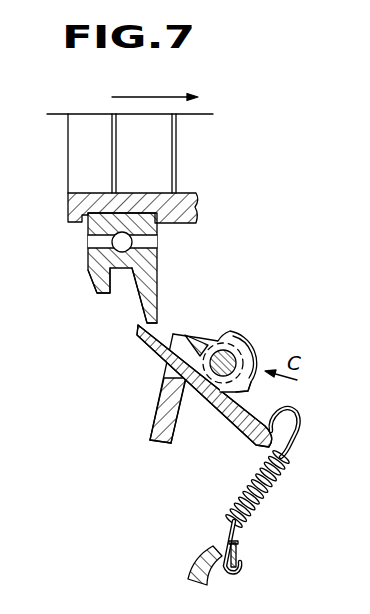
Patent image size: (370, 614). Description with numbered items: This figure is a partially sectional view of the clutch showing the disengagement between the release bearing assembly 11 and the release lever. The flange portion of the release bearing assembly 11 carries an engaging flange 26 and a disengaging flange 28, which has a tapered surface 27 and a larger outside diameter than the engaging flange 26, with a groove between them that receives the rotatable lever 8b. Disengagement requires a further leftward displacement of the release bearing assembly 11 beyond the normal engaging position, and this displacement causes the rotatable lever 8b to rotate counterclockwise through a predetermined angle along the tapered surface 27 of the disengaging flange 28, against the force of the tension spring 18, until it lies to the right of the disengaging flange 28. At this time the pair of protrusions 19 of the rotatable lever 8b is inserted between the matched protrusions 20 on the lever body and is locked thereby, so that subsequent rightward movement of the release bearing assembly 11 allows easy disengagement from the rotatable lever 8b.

The release bearing assembly 11 is at (60, 186).
The disengaging flange 28 is at (158, 293).
The engaging flange 26 is at (93, 282).
The tapered surface 27 is at (137, 300).
The rotatable lever 8b is at (149, 359).
The matched protrusions 20 is at (257, 352).
The protrusions 19 is at (250, 384).
The tension spring 18 is at (275, 486).